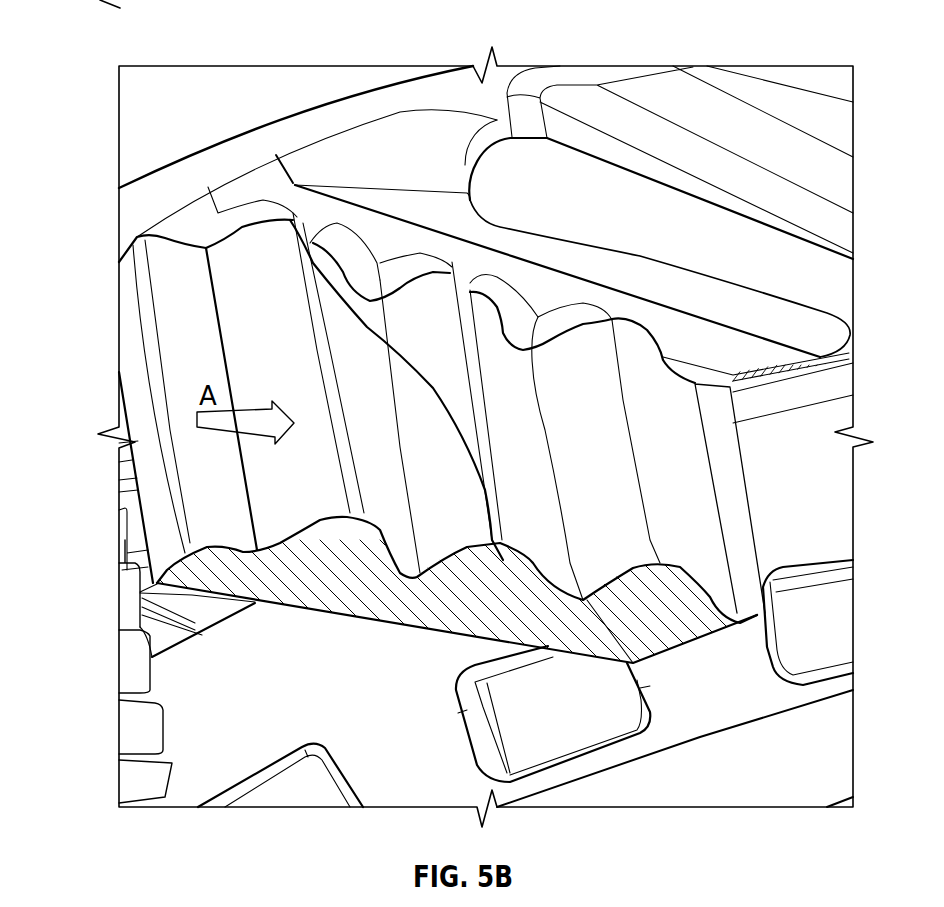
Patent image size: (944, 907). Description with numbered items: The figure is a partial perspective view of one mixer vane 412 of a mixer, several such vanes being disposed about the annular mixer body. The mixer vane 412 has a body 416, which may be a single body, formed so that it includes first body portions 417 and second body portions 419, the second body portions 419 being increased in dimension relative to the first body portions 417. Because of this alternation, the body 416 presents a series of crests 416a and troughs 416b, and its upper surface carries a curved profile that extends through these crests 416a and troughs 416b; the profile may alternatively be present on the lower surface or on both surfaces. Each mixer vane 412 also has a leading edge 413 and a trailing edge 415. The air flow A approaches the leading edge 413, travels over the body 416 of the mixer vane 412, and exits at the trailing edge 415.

The mixer vane 412 is at (118, 371).
The leading edge 413 is at (122, 462).
The trailing edge 415 is at (720, 630).
The body 416 is at (662, 608).
The crests 416a is at (350, 513).
The troughs 416b is at (360, 572).
The first body portions 417 is at (427, 580).
The second body portions 419 is at (292, 573).